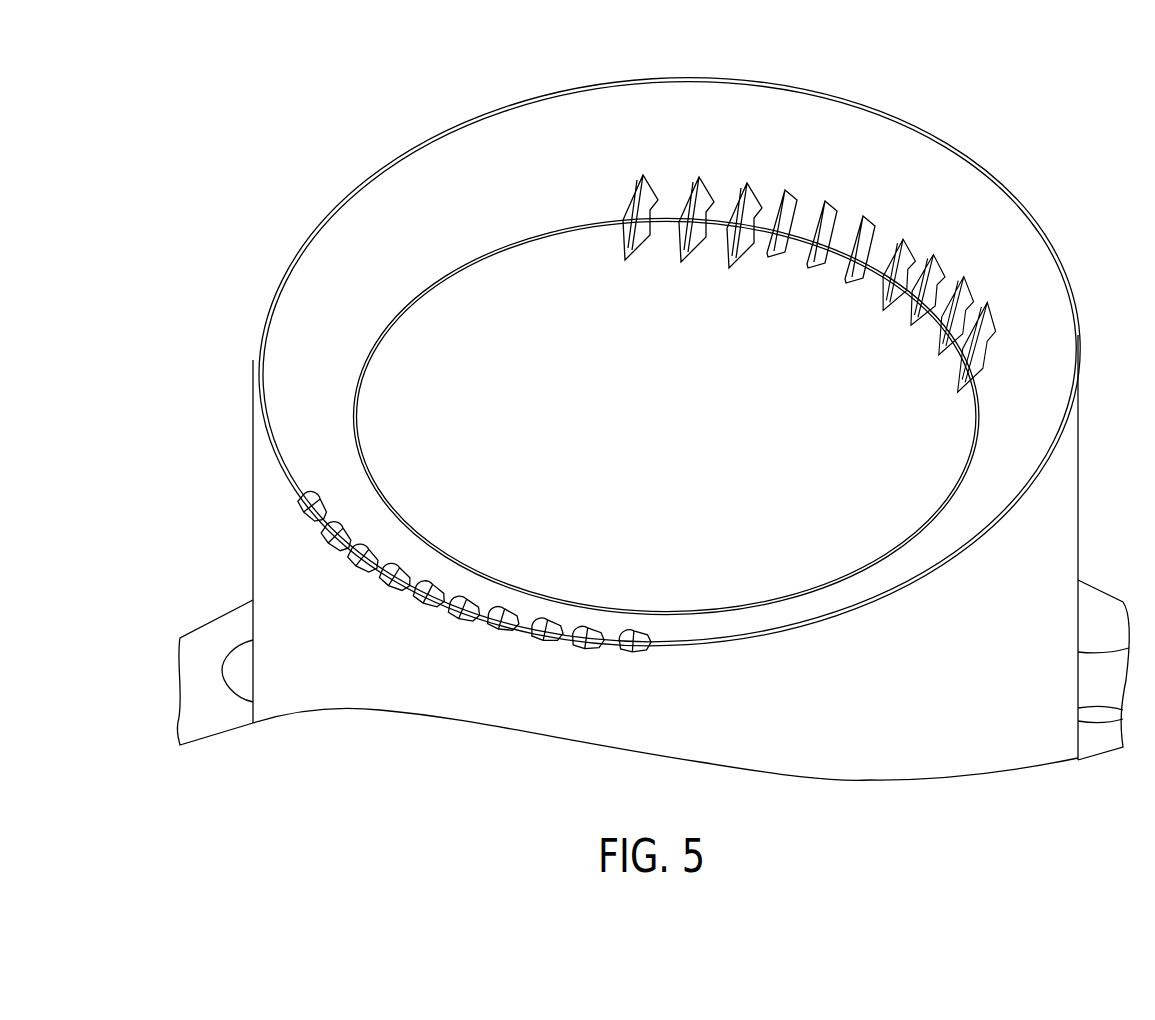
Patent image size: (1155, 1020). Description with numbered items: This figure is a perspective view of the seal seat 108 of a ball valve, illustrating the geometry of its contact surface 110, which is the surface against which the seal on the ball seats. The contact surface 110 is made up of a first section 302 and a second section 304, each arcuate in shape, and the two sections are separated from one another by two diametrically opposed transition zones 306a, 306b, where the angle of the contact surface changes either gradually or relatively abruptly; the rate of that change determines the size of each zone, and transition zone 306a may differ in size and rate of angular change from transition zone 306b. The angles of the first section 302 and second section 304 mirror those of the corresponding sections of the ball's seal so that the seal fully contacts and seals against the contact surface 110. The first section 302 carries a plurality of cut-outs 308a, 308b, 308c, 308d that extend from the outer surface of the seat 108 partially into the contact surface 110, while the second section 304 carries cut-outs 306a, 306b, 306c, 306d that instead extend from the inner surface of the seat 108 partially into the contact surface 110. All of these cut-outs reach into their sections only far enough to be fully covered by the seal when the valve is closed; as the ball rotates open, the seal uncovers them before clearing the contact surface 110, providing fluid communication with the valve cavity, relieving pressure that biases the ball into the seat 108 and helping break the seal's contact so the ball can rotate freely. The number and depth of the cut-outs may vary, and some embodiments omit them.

The seat 108 is at (1032, 136).
The contact surface 110 is at (669, 359).
The first section 302 is at (460, 587).
The second section 304 is at (818, 147).
The transition zone 306a is at (382, 235).
The transition zone 306b is at (735, 238).
The cut-out 306c is at (817, 265).
The cut-out 306d is at (917, 310).
The cut-out 308a is at (293, 517).
The cut-out 308b is at (360, 572).
The cut-out 308c is at (425, 608).
The cut-out 308d is at (542, 642).